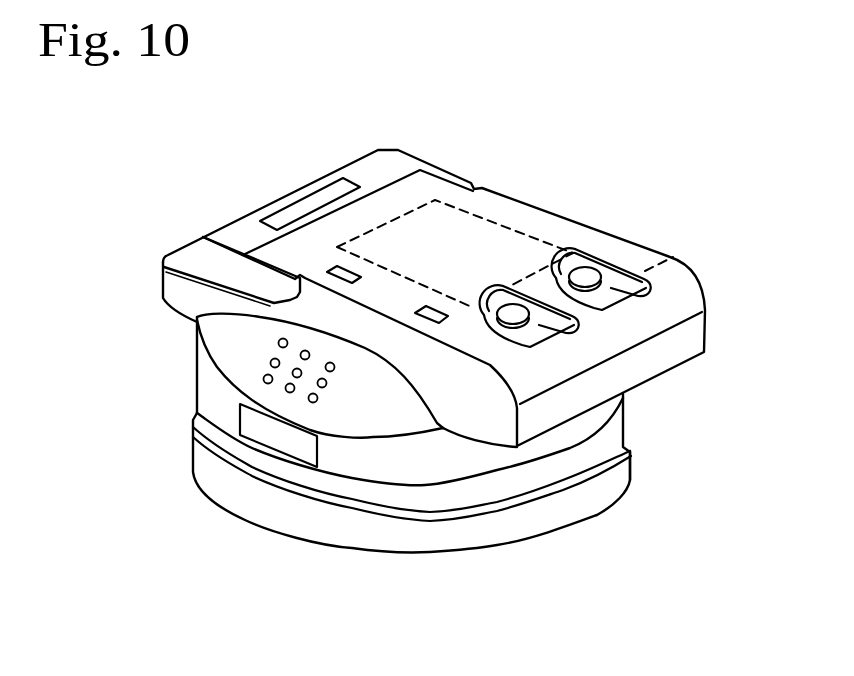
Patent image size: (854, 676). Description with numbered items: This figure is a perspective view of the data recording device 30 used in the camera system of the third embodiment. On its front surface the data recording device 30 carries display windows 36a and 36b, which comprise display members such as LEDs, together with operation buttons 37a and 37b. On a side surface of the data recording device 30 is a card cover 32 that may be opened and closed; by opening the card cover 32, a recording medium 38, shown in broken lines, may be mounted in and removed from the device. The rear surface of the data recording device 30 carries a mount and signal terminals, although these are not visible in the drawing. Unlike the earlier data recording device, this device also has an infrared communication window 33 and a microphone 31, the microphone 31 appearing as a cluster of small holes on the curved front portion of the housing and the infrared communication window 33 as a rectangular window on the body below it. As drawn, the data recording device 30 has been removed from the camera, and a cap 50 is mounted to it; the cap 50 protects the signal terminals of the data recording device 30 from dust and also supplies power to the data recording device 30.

The data recording device 30 is at (505, 190).
The microphone 31 is at (267, 355).
The card cover 32 is at (238, 233).
The infrared communication window 33 is at (283, 442).
The display window 36a is at (446, 320).
The display window 36b is at (357, 282).
The operation button 37a is at (530, 320).
The operation button 37b is at (643, 290).
The recording medium 38 is at (528, 233).
The cap 50 is at (590, 520).